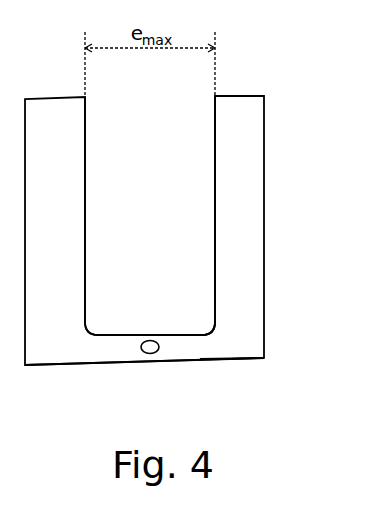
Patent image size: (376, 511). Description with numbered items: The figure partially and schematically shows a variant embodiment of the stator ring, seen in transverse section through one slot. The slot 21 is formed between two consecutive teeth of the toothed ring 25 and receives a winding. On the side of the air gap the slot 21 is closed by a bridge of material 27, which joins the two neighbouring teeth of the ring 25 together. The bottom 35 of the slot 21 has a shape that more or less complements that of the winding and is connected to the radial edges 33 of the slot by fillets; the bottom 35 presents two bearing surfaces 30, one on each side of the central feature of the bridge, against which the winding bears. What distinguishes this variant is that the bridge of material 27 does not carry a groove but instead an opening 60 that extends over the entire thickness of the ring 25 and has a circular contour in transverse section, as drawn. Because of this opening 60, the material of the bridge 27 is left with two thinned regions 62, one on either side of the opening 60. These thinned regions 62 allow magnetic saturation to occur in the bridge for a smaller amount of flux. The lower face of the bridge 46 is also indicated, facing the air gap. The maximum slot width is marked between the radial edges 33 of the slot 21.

The slot 21 is at (187, 105).
The toothed ring 25 is at (247, 110).
The bridge of material 27 is at (105, 343).
The bearing surface 30 is at (194, 334).
The radial edge 33 is at (216, 174).
The bottom of the slot 35 is at (156, 333).
The lower face 46 is at (243, 366).
The opening 60 is at (160, 354).
The thinned region 62 is at (139, 333).